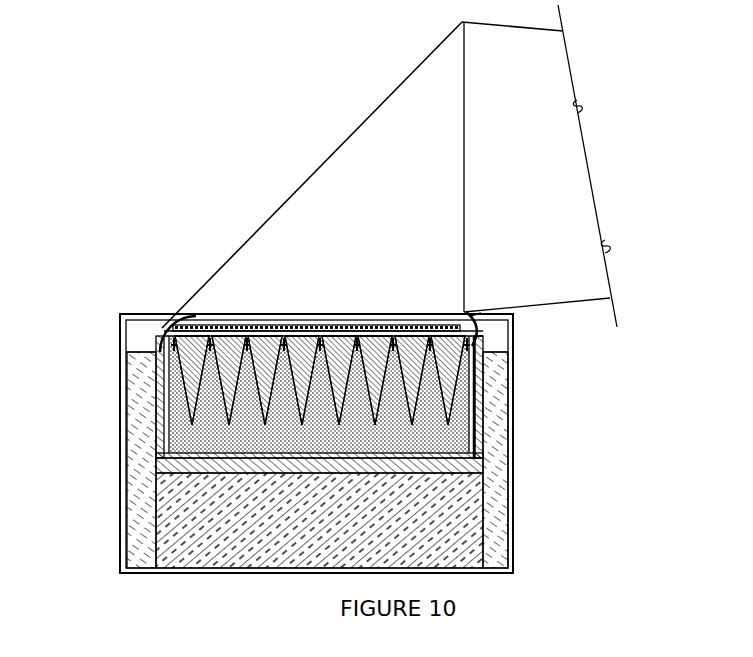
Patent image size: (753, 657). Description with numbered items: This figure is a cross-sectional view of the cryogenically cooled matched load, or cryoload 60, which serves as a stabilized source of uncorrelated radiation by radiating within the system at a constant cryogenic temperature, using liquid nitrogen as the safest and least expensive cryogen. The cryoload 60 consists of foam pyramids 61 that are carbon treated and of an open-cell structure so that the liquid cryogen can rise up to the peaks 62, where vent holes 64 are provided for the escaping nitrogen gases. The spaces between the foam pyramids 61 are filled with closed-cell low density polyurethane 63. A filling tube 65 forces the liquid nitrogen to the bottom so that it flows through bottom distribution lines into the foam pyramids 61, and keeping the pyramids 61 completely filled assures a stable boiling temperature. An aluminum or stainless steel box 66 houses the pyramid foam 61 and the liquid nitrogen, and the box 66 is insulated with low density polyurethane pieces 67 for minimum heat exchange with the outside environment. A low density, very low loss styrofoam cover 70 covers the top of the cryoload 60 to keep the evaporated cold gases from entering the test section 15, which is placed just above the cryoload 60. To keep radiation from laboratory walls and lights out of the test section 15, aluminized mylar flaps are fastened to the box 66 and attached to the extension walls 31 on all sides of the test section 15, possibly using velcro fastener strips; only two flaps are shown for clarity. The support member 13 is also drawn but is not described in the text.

The support arm 13 is at (590, 167).
The test section 15 is at (338, 168).
The extension walls 31 is at (291, 196).
The cryogenically cooled matched load 60 is at (533, 445).
The foam pyramids 61 is at (182, 428).
The peaks 62 is at (172, 334).
The low density polyurethane 63 is at (162, 371).
The vent holes 64 is at (240, 336).
The filling tube 65 is at (168, 394).
The box 66 is at (479, 338).
The polyurethane pieces 67 is at (176, 474).
The styrofoam cover 70 is at (262, 326).